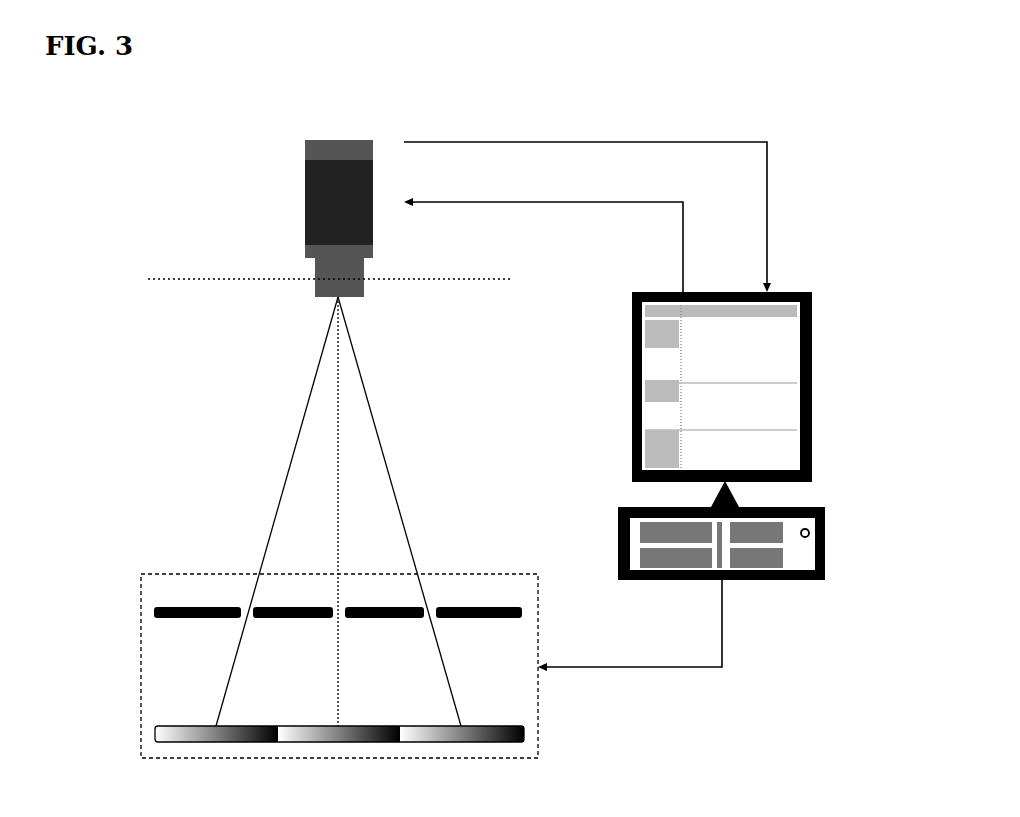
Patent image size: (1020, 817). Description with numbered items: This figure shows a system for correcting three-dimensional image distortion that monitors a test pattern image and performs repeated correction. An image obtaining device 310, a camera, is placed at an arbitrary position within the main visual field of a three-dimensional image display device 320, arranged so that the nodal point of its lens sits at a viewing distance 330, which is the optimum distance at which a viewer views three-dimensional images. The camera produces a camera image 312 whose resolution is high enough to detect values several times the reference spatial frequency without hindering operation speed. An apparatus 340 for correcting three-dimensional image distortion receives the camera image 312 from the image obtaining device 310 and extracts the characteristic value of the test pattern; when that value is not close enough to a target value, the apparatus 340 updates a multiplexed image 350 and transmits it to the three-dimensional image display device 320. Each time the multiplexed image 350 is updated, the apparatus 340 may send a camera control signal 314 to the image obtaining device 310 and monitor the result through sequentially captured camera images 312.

The image obtaining device 310 is at (349, 190).
The camera image 312 is at (587, 202).
The camera control signal 314 is at (543, 245).
The 3D image display device 320 is at (294, 666).
The viewing distance 330 is at (282, 275).
The apparatus for correcting 3D image distortion 340 is at (788, 436).
The multiplexed image 350 is at (630, 650).